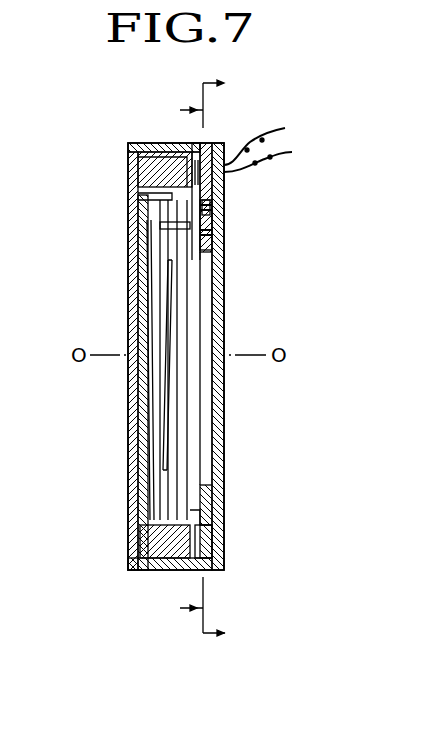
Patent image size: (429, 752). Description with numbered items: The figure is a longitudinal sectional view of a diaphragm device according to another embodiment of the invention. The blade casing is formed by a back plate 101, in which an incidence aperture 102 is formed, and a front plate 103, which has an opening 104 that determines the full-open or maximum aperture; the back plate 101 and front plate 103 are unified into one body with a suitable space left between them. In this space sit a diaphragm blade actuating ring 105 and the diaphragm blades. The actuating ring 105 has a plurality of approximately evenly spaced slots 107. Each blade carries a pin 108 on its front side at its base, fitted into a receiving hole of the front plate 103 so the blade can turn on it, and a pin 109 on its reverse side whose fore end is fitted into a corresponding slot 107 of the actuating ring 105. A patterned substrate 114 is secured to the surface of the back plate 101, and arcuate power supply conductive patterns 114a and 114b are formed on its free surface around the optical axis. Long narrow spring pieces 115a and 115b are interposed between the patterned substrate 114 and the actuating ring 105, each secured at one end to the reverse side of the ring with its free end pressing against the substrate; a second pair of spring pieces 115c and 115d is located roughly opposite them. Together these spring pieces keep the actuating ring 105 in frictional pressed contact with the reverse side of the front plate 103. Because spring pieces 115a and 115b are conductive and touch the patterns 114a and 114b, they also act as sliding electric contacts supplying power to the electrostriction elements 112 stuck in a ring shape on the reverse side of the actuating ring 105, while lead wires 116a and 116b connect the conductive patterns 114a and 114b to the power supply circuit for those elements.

The blade casing back plate 101 is at (225, 562).
The incidence aperture 102 is at (218, 398).
The blade casing front plate 103 is at (143, 226).
The opening 104 is at (148, 393).
The diaphragm blade actuating ring 105 is at (145, 172).
The slots 107 is at (185, 231).
The pin 108 is at (145, 208).
The pin 109 is at (210, 228).
The electrostriction elements 112 is at (198, 151).
The patterned substrate 114 is at (205, 148).
The arcuate power supply conductive pattern 114a is at (225, 200).
The arcuate power supply conductive pattern 114b is at (225, 210).
The spring piece 115a is at (222, 184).
The spring piece 115b is at (225, 215).
The spring piece 115c is at (218, 516).
The spring piece 115d is at (215, 494).
The lead wire 116a is at (270, 125).
The lead wire 116b is at (292, 152).